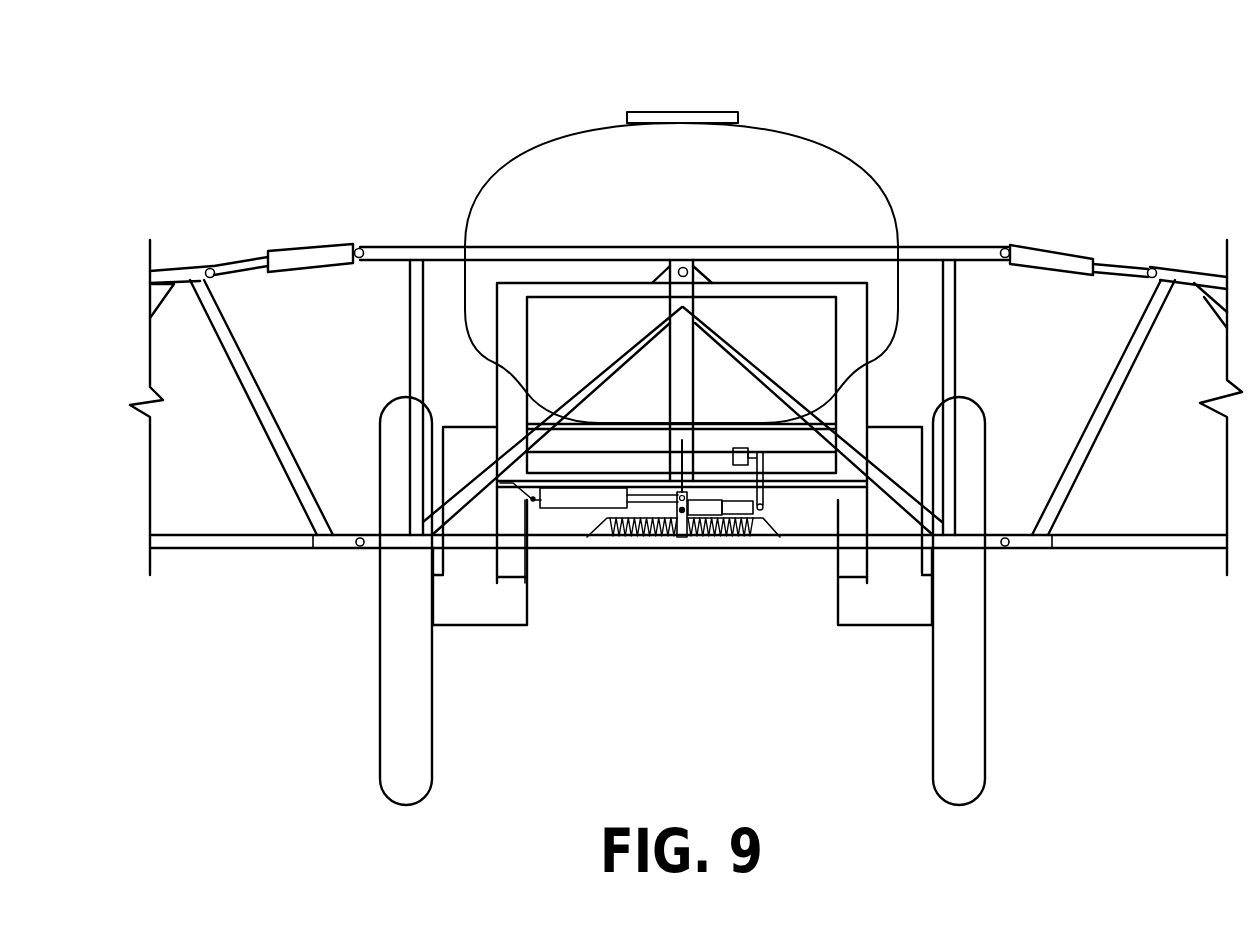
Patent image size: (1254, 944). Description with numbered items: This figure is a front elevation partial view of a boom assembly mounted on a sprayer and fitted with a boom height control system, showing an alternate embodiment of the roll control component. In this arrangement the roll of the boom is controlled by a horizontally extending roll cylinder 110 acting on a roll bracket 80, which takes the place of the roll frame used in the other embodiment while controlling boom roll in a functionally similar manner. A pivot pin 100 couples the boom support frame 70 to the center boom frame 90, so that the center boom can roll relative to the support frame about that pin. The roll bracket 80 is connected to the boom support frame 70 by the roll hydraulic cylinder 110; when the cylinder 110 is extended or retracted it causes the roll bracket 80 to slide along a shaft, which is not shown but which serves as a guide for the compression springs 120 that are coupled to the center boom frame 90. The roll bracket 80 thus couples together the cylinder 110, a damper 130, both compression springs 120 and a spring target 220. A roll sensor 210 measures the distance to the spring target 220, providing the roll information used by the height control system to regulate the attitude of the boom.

The boom support frame 70 is at (523, 484).
The roll bracket 80 is at (682, 537).
The center boom frame 90 is at (813, 542).
The pivot pin 100 is at (683, 270).
The roll cylinder 110 is at (580, 497).
The compression springs 120 is at (647, 533).
The damper 130 is at (748, 510).
The roll sensor 210 is at (746, 447).
The spring target 220 is at (738, 450).